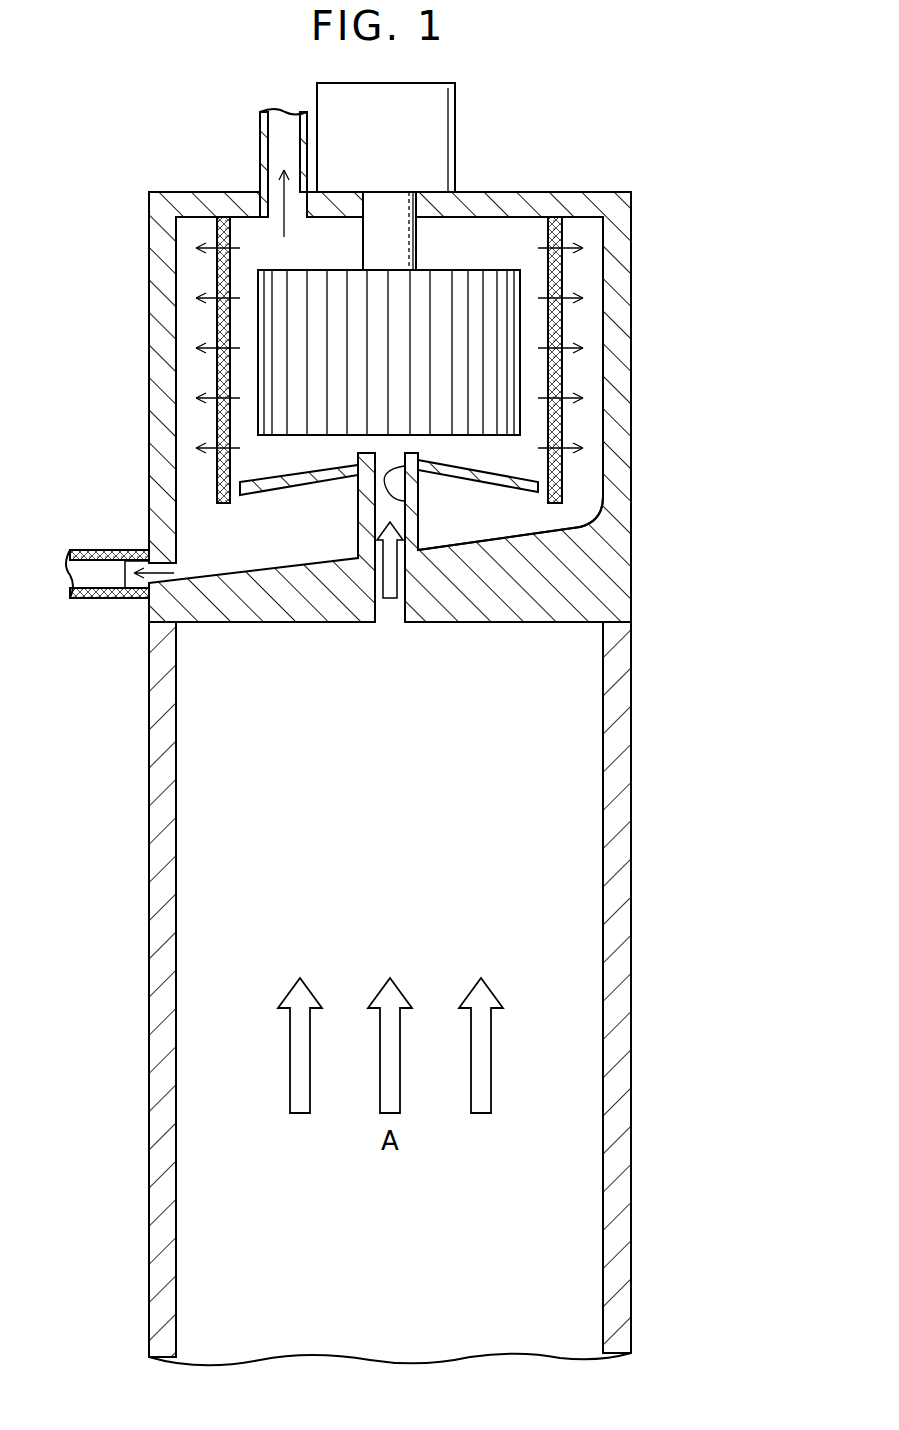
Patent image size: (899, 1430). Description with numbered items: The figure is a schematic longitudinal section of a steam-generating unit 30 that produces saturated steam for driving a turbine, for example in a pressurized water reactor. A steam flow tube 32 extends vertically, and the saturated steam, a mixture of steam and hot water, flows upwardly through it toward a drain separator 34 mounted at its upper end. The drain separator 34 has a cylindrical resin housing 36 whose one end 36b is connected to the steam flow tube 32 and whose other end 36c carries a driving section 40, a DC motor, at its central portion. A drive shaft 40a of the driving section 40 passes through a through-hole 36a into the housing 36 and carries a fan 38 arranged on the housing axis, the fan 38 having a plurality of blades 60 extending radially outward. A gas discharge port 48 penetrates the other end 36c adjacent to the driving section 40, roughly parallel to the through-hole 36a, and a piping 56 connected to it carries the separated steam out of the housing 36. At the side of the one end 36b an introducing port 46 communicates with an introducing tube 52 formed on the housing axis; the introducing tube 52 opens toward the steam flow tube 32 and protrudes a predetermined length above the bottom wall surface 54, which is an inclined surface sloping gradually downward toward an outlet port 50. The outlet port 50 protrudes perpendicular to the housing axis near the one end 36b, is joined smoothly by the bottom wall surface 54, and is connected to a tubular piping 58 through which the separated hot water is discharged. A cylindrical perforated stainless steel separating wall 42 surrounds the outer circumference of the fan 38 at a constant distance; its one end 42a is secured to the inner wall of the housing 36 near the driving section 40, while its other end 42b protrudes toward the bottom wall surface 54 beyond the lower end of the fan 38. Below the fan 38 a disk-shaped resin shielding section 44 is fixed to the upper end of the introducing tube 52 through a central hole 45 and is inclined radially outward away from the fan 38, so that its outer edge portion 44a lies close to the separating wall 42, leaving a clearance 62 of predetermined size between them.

The steam-generating unit 30 is at (604, 56).
The steam flow tube 32 is at (633, 838).
The drain separator 34 is at (176, 190).
The housing 36 is at (634, 442).
The through-hole 36a is at (405, 204).
The one end of housing 36b is at (577, 606).
The other end of housing 36c is at (580, 208).
The fan 38 is at (448, 268).
The driving section 40 is at (442, 134).
The drive shaft 40a is at (372, 255).
The separating wall 42 is at (565, 325).
The one end of separating wall 42a is at (215, 250).
The other end of separating wall 42b is at (216, 497).
The shielding section 44 is at (277, 490).
The outer edge portion 44a is at (527, 494).
The hole 45 is at (360, 508).
The introducing port 46 is at (382, 622).
The gas discharge port 48 is at (282, 215).
The outlet port 50 is at (126, 572).
The introducing tube 52 is at (407, 503).
The bottom wall surface 54 is at (455, 528).
The piping 56 is at (259, 134).
The tubular piping 58 is at (105, 600).
The blades 60 is at (304, 428).
The clearance 62 is at (592, 495).